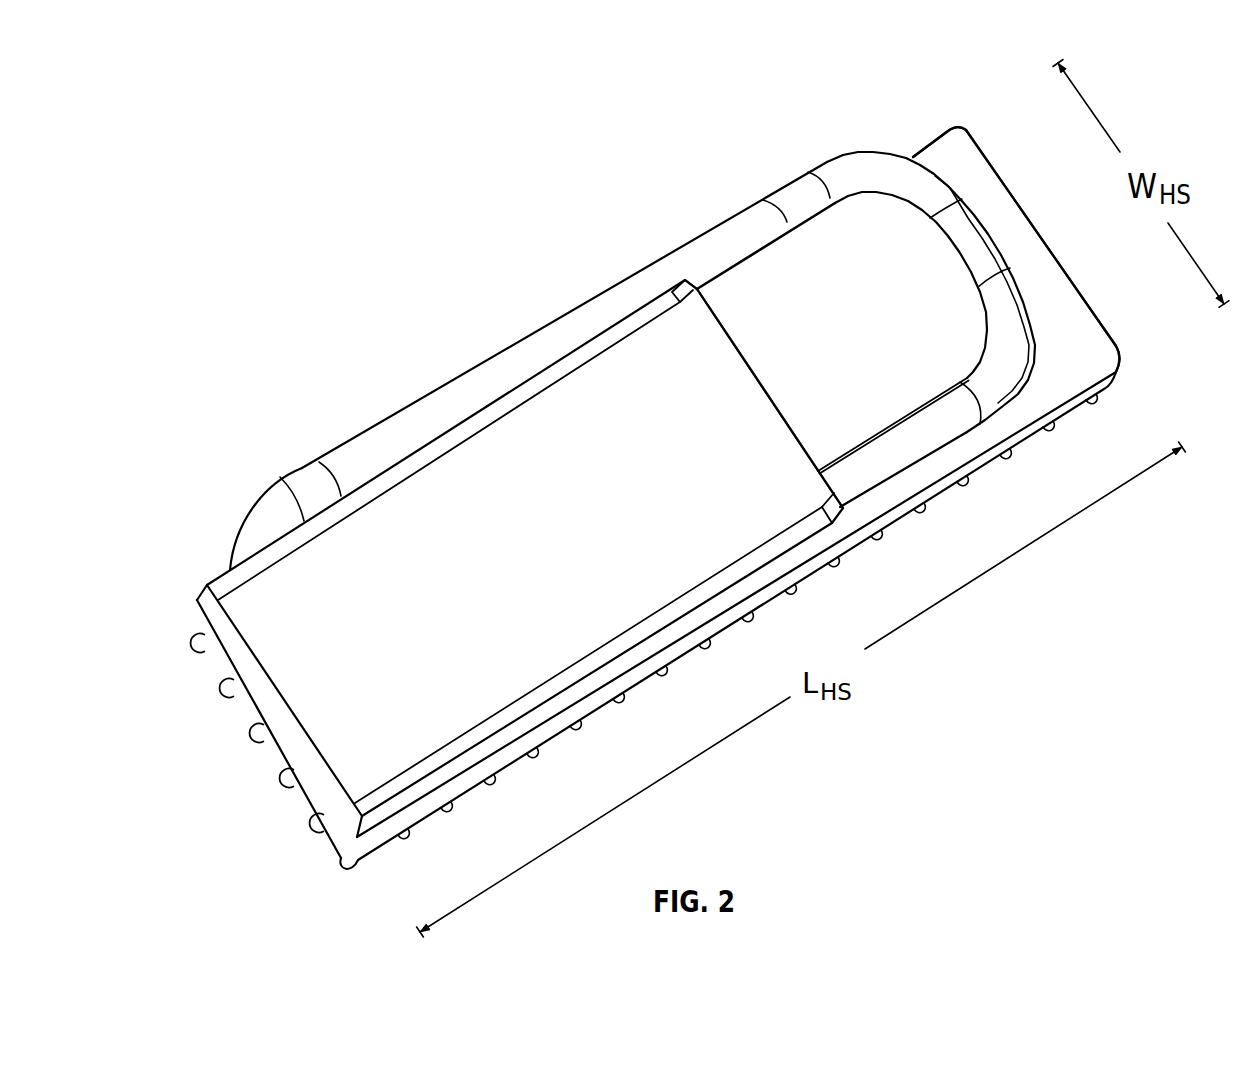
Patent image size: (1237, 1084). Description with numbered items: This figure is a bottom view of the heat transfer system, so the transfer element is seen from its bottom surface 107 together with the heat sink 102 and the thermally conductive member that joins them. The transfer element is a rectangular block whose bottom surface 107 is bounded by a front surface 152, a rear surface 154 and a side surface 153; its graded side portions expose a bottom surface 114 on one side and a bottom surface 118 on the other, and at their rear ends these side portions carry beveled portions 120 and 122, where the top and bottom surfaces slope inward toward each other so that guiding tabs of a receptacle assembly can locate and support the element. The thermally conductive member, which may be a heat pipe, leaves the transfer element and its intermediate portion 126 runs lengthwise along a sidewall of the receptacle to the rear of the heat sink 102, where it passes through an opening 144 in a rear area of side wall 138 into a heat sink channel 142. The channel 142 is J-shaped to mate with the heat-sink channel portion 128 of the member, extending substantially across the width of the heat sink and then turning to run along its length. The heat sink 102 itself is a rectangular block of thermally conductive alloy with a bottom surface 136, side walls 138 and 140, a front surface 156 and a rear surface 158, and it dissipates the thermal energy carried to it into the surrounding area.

The heat sink 102 is at (1143, 376).
The bottom surface 107 is at (593, 521).
The bottom surface 114 is at (492, 412).
The bottom surface 118 is at (760, 558).
The beveled portion 120 is at (697, 280).
The beveled portion 122 is at (853, 500).
The intermediate portion 126 is at (380, 442).
The heat-sink channel portion 128 is at (928, 194).
The bottom surface 136 is at (877, 331).
The side wall 138 is at (961, 114).
The side wall 140 is at (1022, 440).
The heat sink channel 142 is at (1010, 245).
The opening 144 is at (889, 138).
The front surface 152 is at (303, 743).
The side surface 153 is at (820, 533).
The rear surface 154 is at (773, 387).
The front surface 156 is at (250, 700).
The rear surface 158 is at (1109, 297).